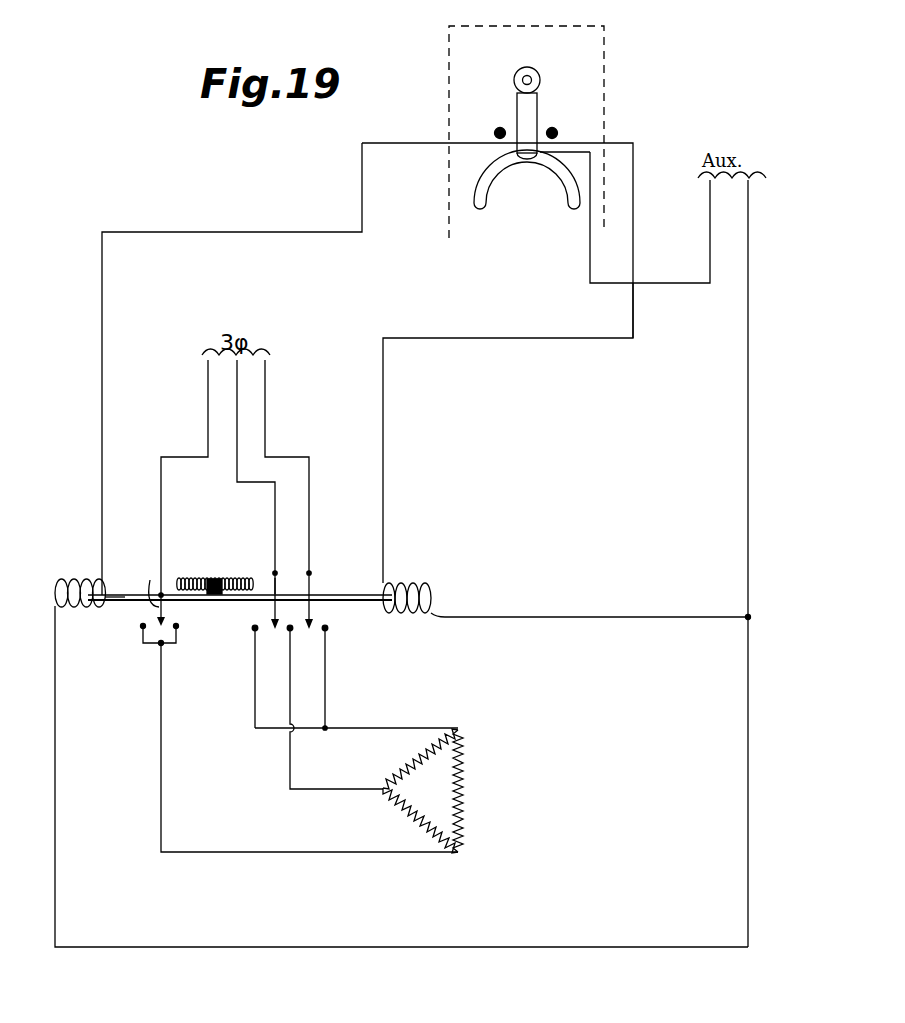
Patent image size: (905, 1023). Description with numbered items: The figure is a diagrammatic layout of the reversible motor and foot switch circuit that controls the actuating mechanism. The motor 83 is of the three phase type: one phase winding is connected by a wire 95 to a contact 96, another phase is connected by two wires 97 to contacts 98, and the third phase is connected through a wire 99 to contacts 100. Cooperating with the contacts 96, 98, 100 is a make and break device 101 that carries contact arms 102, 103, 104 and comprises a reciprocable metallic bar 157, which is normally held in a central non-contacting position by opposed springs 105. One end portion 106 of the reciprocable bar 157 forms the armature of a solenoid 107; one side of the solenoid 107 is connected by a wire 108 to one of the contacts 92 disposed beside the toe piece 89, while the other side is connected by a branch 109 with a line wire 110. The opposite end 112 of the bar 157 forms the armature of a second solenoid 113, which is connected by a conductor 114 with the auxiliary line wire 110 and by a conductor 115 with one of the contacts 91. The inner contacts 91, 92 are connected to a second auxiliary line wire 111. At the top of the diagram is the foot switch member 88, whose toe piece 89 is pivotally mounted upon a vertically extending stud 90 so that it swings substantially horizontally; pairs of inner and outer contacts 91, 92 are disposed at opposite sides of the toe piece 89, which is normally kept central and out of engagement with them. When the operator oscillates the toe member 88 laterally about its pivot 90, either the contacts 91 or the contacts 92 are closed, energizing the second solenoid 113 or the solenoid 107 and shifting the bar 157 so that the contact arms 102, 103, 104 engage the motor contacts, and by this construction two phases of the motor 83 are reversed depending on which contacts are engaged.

The reversible motor 83 is at (443, 763).
The foot switch member 88 is at (531, 101).
The toe piece 89 is at (485, 183).
The stud 90 is at (529, 71).
The contacts 91 is at (515, 140).
The contacts 92 is at (541, 140).
The wire 95 is at (291, 700).
The contact 96 is at (291, 632).
The wires 97 is at (255, 658).
The contacts 98 is at (254, 627).
The wire 99 is at (160, 711).
The contacts 100 is at (141, 629).
The make and break device 101 is at (349, 592).
The contact arm 102 is at (277, 611).
The contact arm 103 is at (312, 611).
The contact arm 104 is at (144, 596).
The springs 105 is at (234, 578).
The end portion 106 is at (372, 600).
The solenoid 107 is at (431, 591).
The wire 108 is at (604, 340).
The branch 109 is at (608, 616).
The line wire 110 is at (750, 462).
The second auxiliary line wire 111 is at (668, 282).
The opposite end 112 is at (117, 601).
The second solenoid 113 is at (61, 579).
The conductor 114 is at (256, 949).
The conductor 115 is at (281, 232).
The reciprocable metallic bar 157 is at (272, 582).